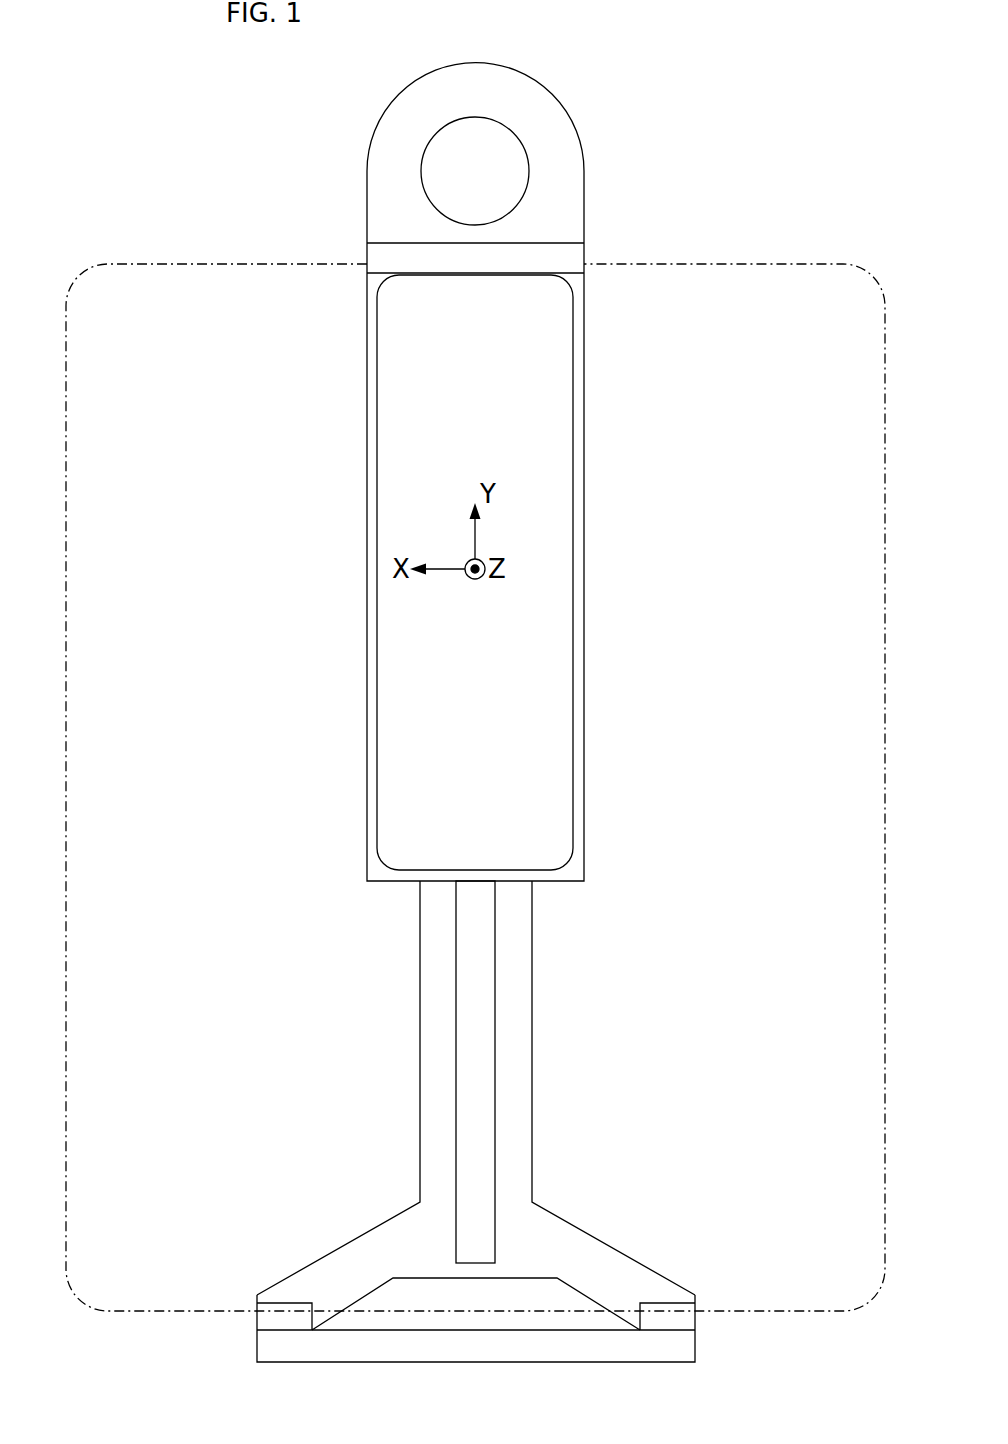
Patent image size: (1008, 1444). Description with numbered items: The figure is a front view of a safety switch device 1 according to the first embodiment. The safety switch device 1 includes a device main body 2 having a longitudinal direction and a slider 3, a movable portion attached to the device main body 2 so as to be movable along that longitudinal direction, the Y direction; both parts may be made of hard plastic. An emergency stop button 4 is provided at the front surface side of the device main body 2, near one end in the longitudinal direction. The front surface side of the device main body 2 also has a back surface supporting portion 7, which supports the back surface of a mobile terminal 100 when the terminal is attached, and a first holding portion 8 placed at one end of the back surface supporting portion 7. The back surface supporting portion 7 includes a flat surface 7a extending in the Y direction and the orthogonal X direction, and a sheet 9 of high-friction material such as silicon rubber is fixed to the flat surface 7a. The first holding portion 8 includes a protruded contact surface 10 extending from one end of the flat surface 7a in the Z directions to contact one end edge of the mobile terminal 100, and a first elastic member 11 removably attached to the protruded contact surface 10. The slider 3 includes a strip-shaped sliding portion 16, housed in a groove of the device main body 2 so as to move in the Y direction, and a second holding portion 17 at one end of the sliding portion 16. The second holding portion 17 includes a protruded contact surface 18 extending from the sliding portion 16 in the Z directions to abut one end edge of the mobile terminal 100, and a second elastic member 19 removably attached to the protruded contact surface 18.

The safety switch device 1 is at (198, 152).
The device main body 2 is at (482, 472).
The slider 3 is at (483, 1121).
The emergency stop button 4 is at (529, 165).
The back surface supporting portion 7 is at (585, 665).
The flat surface 7a is at (573, 707).
The first holding portion 8 is at (397, 356).
The sheet 9 is at (533, 757).
The protruded contact surface 10 is at (377, 243).
The first elastic member 11 is at (572, 277).
The sliding portion 16 is at (420, 1031).
The second holding portion 17 is at (483, 1246).
The protruded contact surface 18 is at (573, 1330).
The second elastic member 19 is at (590, 1172).
The mobile terminal 100 is at (103, 265).